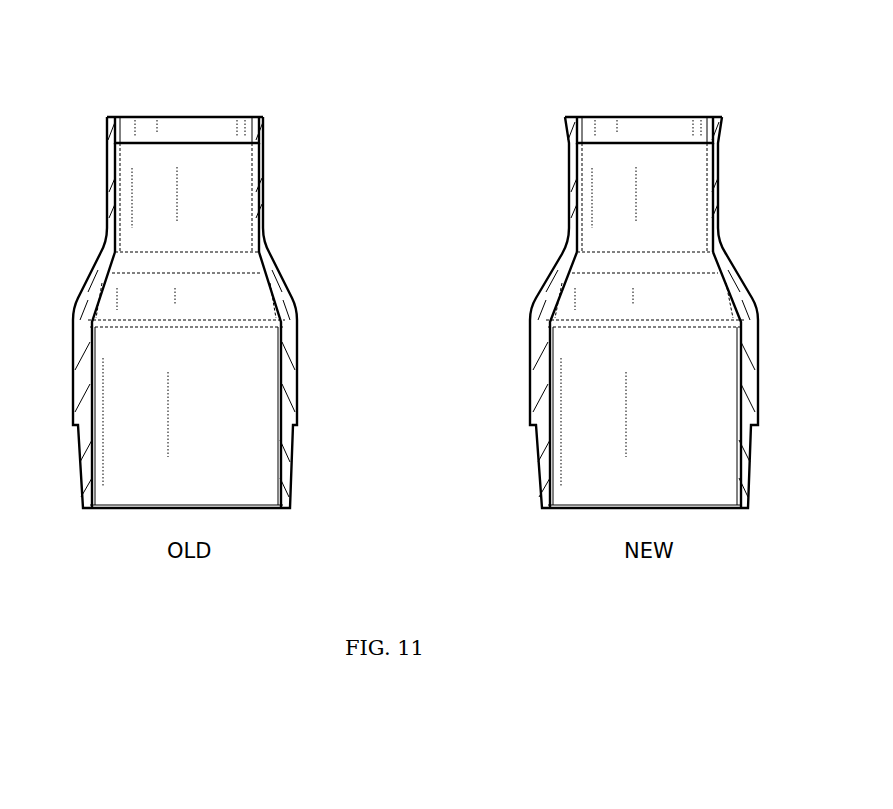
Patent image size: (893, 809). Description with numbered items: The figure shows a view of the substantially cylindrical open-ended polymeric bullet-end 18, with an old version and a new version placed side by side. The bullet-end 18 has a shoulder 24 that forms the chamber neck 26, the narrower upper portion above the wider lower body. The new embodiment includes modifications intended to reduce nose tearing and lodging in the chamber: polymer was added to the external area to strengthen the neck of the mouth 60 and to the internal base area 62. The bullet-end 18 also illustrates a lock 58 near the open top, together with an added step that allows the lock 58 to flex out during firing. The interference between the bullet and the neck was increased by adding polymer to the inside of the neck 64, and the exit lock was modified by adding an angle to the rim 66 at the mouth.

The substantially cylindrical open-ended polymeric bullet-end 18 is at (417, 264).
The shoulder 24 is at (90, 284).
The chamber neck 26 is at (187, 184).
The lock 58 is at (214, 104).
The neck of the mouth 60 is at (262, 168).
The internal base area 62 is at (245, 264).
The inside of the neck 64 is at (235, 207).
The rim 66 is at (265, 127).